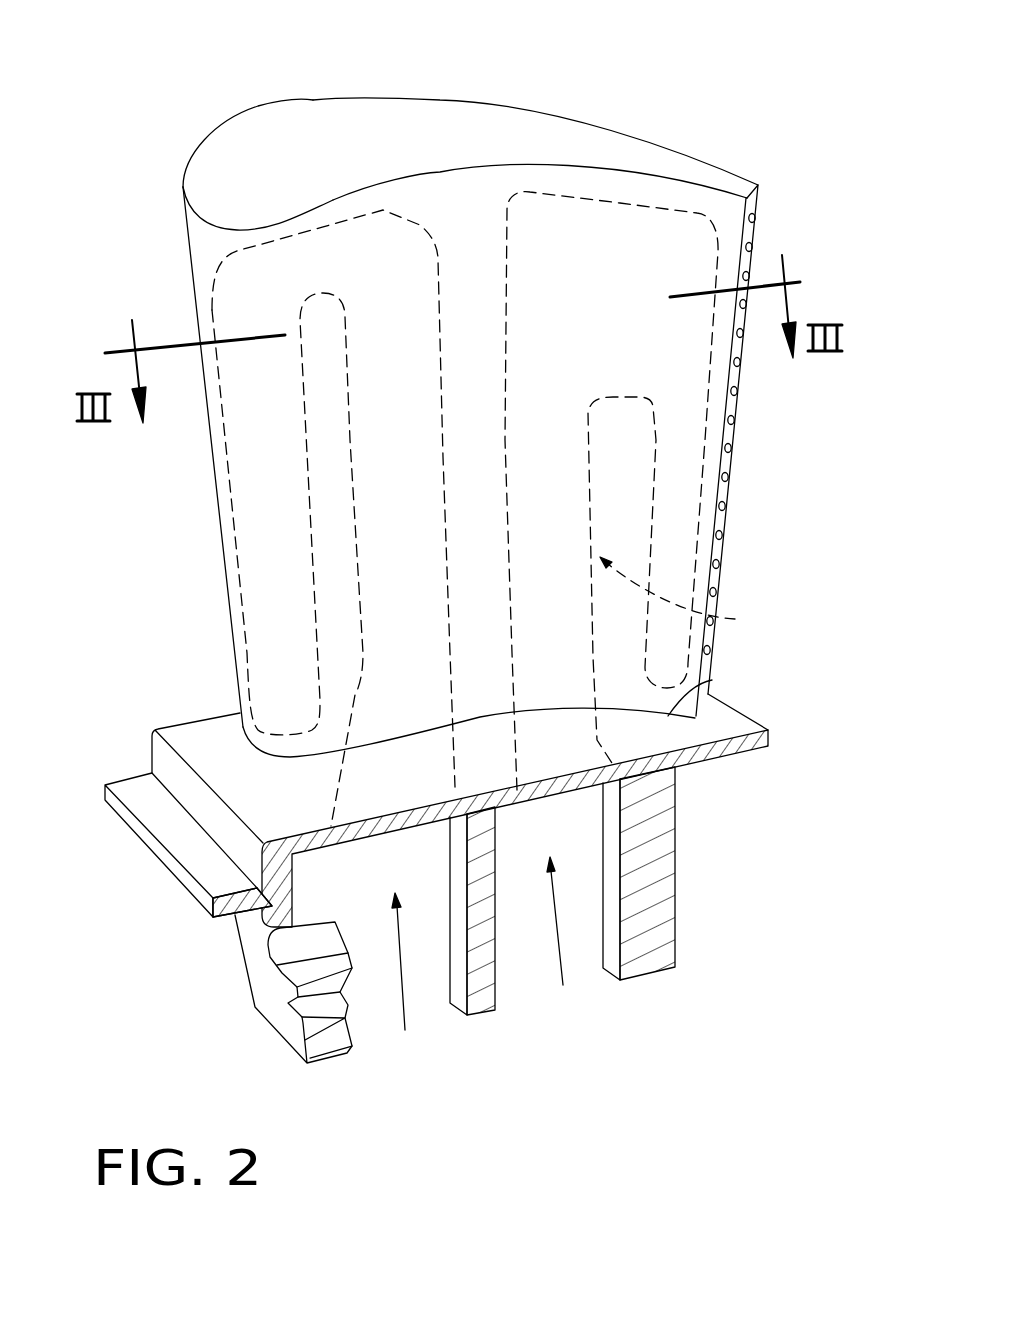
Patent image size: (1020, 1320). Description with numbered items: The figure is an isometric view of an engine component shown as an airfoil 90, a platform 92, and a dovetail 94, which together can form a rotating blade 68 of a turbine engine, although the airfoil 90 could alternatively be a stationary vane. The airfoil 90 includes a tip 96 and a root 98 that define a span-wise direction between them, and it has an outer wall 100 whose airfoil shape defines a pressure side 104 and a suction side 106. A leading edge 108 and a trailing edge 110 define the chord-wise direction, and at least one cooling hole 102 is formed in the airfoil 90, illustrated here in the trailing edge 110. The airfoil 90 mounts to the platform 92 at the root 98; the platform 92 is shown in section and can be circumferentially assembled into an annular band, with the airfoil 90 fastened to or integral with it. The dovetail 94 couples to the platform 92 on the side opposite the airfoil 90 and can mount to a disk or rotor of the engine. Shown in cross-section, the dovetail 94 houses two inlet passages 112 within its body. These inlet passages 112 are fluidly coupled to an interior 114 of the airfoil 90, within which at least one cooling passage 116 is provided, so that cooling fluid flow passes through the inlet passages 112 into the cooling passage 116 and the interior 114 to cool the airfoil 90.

The rotating blade 68 is at (660, 82).
The airfoil 90 is at (447, 123).
The platform 92 is at (197, 733).
The dovetail 94 is at (267, 978).
The tip 96 is at (258, 163).
The root 98 is at (712, 680).
The outer wall 100 is at (500, 509).
The cooling hole 102 is at (732, 505).
The pressure side 104 is at (417, 178).
The suction side 106 is at (500, 108).
The leading edge 108 is at (213, 226).
The trailing edge 110 is at (758, 190).
The inlet passages 112 is at (432, 1041).
The interior 114 is at (735, 619).
The cooling passage 116 is at (703, 556).